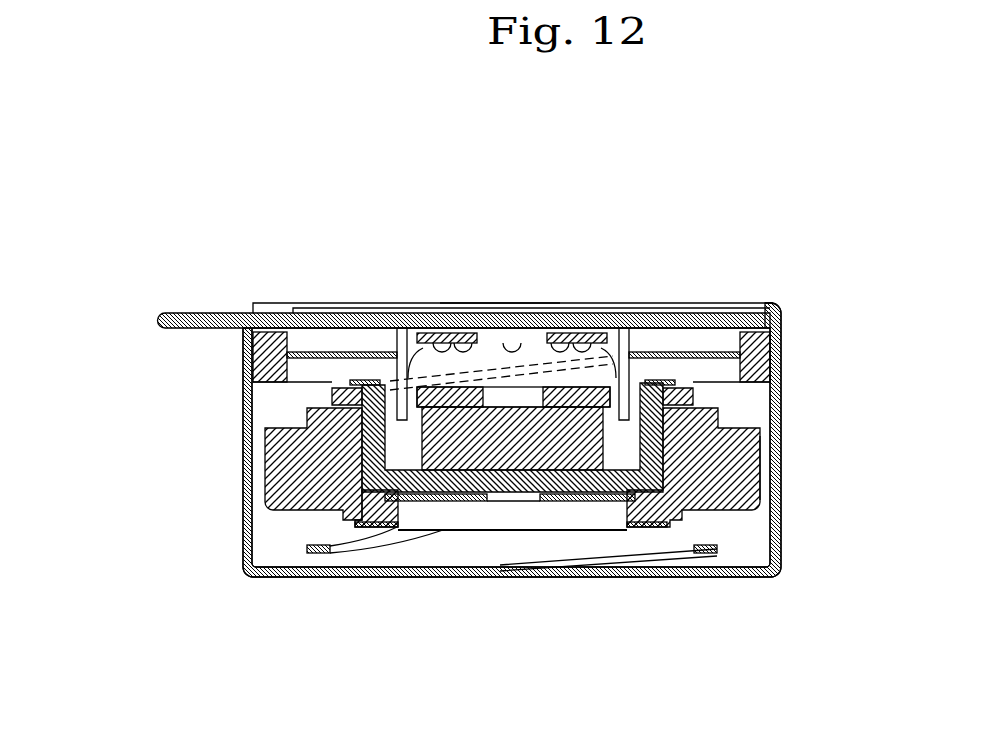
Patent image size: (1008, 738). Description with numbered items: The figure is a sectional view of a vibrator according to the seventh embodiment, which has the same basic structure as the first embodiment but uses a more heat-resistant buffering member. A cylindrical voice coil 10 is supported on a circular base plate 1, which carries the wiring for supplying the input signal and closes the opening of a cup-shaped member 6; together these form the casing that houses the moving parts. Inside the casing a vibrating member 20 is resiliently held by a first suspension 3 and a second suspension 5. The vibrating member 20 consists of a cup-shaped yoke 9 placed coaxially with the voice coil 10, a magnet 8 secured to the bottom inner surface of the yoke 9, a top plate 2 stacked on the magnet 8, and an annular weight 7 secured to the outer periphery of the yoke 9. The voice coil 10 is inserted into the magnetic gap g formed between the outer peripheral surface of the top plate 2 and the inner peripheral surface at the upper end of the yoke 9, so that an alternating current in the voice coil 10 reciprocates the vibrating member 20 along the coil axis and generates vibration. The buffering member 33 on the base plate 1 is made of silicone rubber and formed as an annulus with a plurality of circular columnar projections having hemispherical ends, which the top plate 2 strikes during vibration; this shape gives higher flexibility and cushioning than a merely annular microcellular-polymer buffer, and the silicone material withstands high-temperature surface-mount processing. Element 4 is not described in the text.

The base plate 1 is at (295, 303).
The voice coil 10 is at (427, 303).
The buffering member 33 is at (480, 303).
The top plate 2 is at (580, 330).
The first suspension 3 is at (692, 350).
The case 4 is at (777, 352).
The magnetic gap g is at (725, 435).
The cup-shaped member 6 is at (778, 470).
The vibrating member 20 is at (778, 575).
The magnet 8 is at (548, 440).
The second suspension 5 is at (392, 520).
The yoke 9 is at (362, 458).
The weight 7 is at (362, 452).